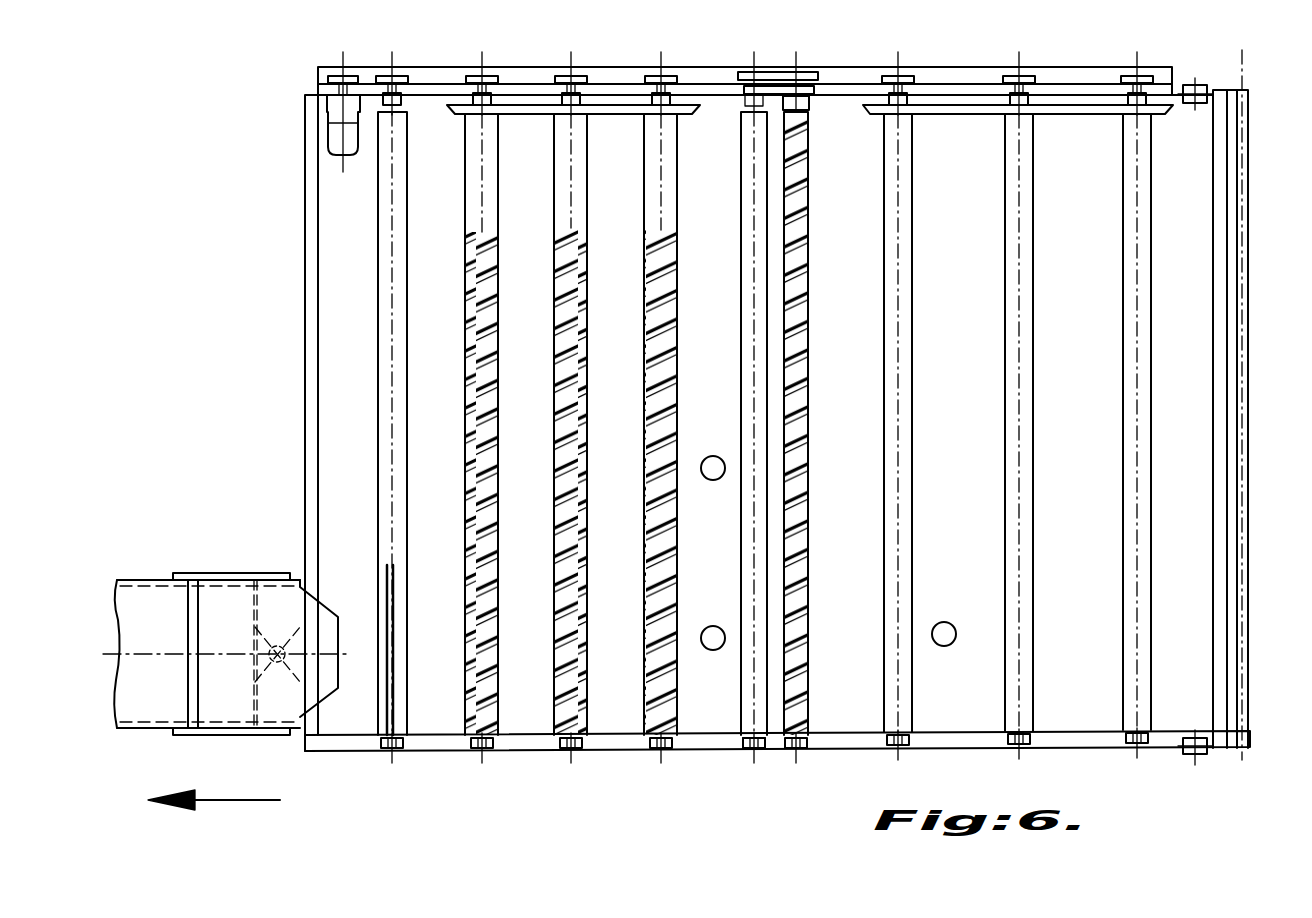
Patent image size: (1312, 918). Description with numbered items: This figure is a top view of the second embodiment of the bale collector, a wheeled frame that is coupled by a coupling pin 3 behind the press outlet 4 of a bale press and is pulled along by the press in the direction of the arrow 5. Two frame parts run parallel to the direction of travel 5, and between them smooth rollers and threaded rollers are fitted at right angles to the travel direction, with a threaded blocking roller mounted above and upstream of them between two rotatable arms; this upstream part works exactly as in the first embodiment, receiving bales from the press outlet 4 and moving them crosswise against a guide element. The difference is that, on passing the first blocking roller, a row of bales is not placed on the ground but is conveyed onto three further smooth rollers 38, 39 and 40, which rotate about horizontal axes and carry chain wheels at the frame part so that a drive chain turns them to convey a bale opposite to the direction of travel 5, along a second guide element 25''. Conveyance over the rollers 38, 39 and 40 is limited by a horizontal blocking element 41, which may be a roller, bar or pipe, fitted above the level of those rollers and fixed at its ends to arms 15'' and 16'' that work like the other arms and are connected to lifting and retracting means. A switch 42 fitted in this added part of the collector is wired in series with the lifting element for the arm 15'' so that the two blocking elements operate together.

The coupling pin 3 is at (277, 646).
The press outlet 4 is at (150, 582).
The direction of travel 5 is at (198, 806).
The arm 15'' is at (1239, 758).
The arm 16'' is at (1244, 73).
The guide element 25'' is at (1018, 65).
The smooth roller 38 is at (910, 382).
The smooth roller 39 is at (1030, 362).
The smooth roller 40 is at (1150, 354).
The blocking element 41 is at (1246, 294).
The switch 42 is at (946, 623).